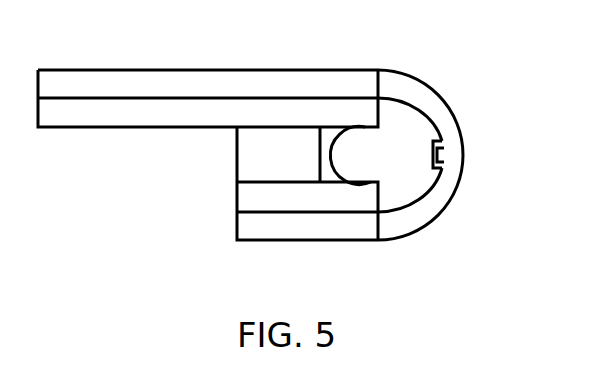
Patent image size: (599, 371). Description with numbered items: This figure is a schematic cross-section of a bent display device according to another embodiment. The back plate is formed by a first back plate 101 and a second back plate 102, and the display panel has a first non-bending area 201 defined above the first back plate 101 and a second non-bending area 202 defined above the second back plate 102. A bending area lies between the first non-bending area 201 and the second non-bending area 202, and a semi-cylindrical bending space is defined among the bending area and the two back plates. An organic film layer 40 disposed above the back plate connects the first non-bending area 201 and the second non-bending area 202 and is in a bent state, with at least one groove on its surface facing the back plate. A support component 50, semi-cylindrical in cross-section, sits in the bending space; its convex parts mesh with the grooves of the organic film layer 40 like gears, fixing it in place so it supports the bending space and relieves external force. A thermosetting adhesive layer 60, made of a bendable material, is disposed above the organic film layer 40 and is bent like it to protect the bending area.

The first non-bending area 201 is at (108, 83).
The first back plate 101 is at (100, 110).
The second back plate 102 is at (257, 195).
The second non-bending area 202 is at (256, 228).
The organic film layer 40 is at (401, 223).
The support component 50 is at (393, 132).
The thermosetting adhesive layer 60 is at (438, 125).